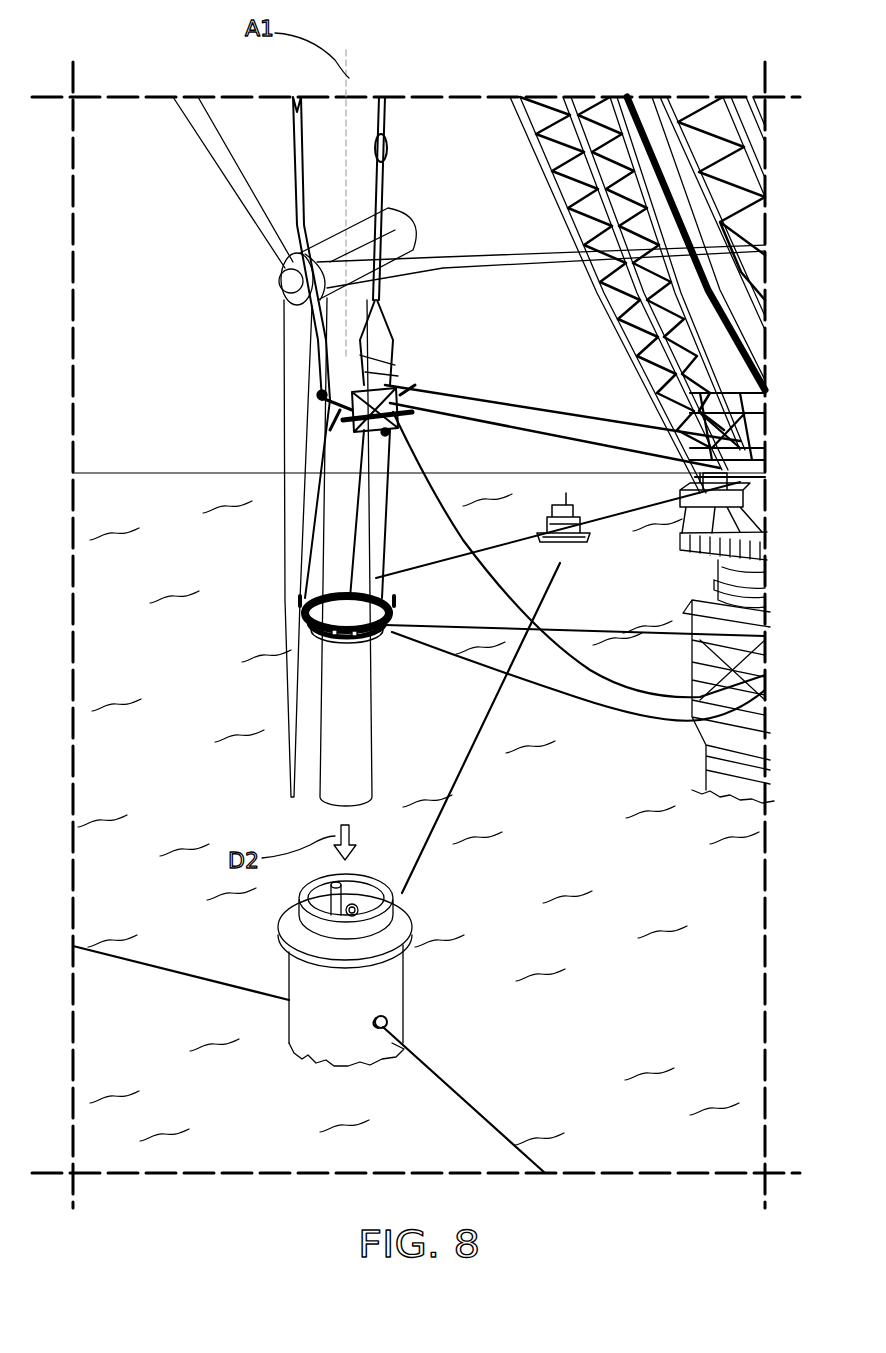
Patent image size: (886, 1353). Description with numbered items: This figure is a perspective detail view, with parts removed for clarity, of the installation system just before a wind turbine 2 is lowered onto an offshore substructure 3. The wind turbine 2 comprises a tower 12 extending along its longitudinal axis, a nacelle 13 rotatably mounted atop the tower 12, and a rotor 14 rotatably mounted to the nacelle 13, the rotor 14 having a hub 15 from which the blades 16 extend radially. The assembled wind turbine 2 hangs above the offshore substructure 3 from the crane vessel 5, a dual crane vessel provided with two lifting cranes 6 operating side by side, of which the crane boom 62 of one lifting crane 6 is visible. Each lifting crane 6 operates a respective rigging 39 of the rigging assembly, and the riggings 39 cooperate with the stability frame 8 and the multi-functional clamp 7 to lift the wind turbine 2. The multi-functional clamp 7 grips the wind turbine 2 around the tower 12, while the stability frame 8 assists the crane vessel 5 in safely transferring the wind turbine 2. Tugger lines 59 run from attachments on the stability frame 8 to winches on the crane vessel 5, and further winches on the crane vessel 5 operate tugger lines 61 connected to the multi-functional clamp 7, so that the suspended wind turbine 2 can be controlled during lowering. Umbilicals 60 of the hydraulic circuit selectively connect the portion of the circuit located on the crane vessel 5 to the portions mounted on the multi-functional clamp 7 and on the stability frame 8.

The wind turbine 2 is at (222, 388).
The offshore substructure 3 is at (435, 984).
The crane vessel 5 is at (710, 823).
The lifting crane 6 is at (623, 70).
The multi-functional clamp 7 is at (389, 662).
The stability frame 8 is at (409, 383).
The tower 12 is at (363, 772).
The nacelle 13 is at (395, 208).
The rotor 14 is at (212, 282).
The hub 15 is at (285, 286).
The blade 16 is at (215, 160).
The rigging 39 is at (258, 118).
The tugger line 59 is at (560, 430).
The umbilical 60 is at (443, 495).
The tugger line 61 is at (445, 562).
The crane boom 62 is at (538, 172).